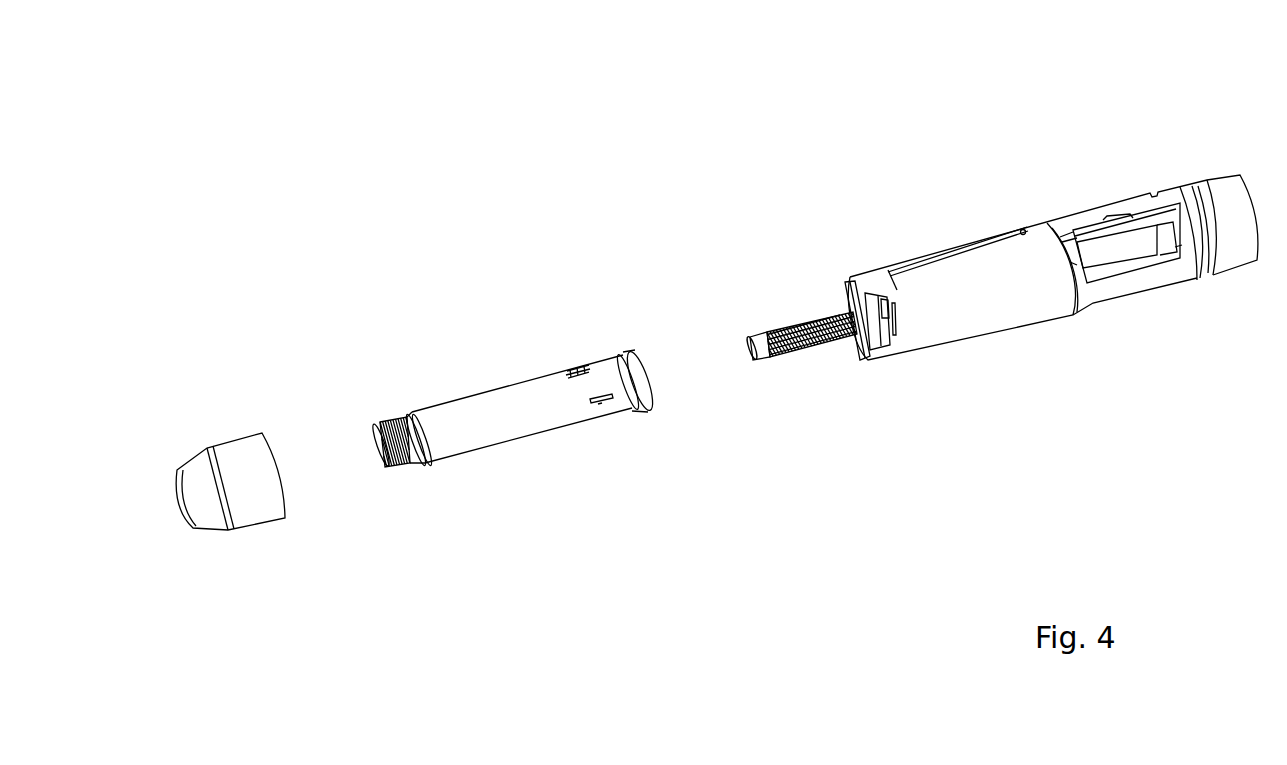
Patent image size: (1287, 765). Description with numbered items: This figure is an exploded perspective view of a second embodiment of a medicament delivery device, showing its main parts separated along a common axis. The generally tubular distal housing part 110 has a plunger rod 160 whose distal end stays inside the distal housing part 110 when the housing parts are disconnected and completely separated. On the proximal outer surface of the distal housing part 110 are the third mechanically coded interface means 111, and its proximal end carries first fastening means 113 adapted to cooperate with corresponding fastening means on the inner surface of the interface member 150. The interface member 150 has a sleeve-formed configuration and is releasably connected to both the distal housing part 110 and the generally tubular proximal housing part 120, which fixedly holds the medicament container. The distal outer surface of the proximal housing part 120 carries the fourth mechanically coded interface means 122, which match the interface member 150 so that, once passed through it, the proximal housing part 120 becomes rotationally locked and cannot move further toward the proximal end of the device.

The distal housing part 110 is at (1020, 272).
The third mechanically coded interface means 111 is at (893, 330).
The first fastening means 113 is at (868, 293).
The proximal housing part 120 is at (505, 402).
The fourth mechanically coded interface means 122 is at (600, 403).
The interface member 150 is at (248, 460).
The plunger rod 160 is at (802, 347).